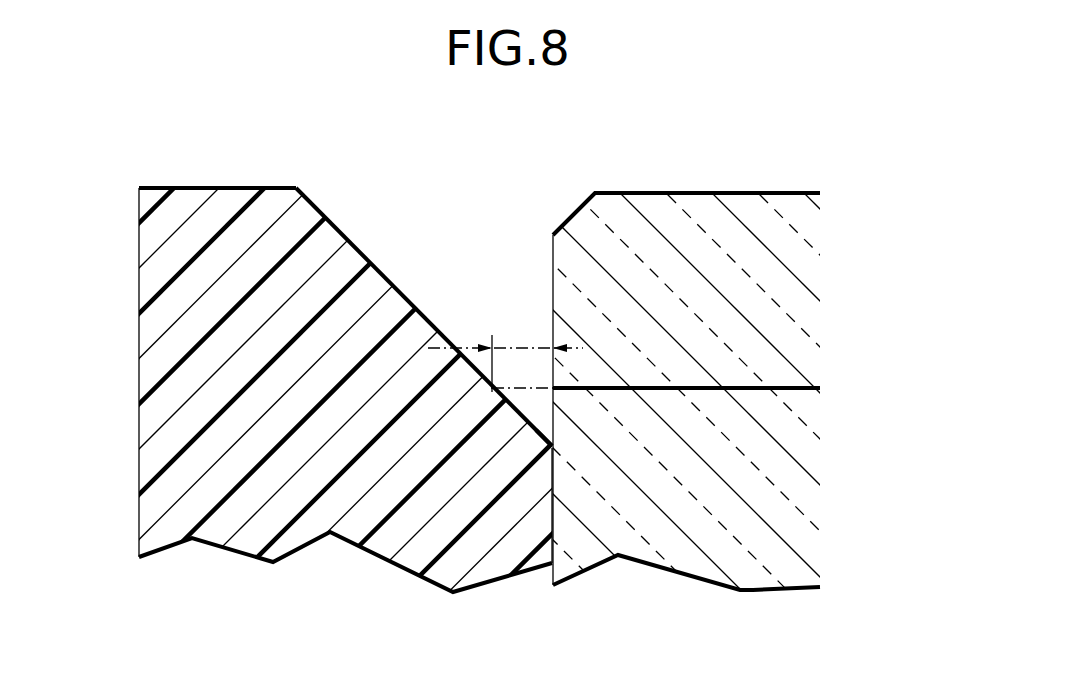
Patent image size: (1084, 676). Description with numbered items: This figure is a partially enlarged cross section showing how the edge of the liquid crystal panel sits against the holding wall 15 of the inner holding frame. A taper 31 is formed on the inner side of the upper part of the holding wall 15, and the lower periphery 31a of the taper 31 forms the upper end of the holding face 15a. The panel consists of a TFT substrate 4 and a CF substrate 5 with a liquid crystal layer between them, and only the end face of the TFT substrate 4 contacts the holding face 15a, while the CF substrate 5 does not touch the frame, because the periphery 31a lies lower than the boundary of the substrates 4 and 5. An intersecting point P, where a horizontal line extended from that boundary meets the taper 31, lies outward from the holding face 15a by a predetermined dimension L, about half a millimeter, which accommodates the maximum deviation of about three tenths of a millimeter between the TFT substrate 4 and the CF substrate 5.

The holding wall 15 is at (228, 216).
The taper 31 is at (360, 252).
The lower periphery of the taper 31a is at (553, 446).
The holding face 15a is at (553, 487).
The CF substrate 5 is at (693, 218).
The TFT substrate 4 is at (807, 470).
The intersecting point P is at (490, 388).
The predetermined dimension L is at (505, 352).